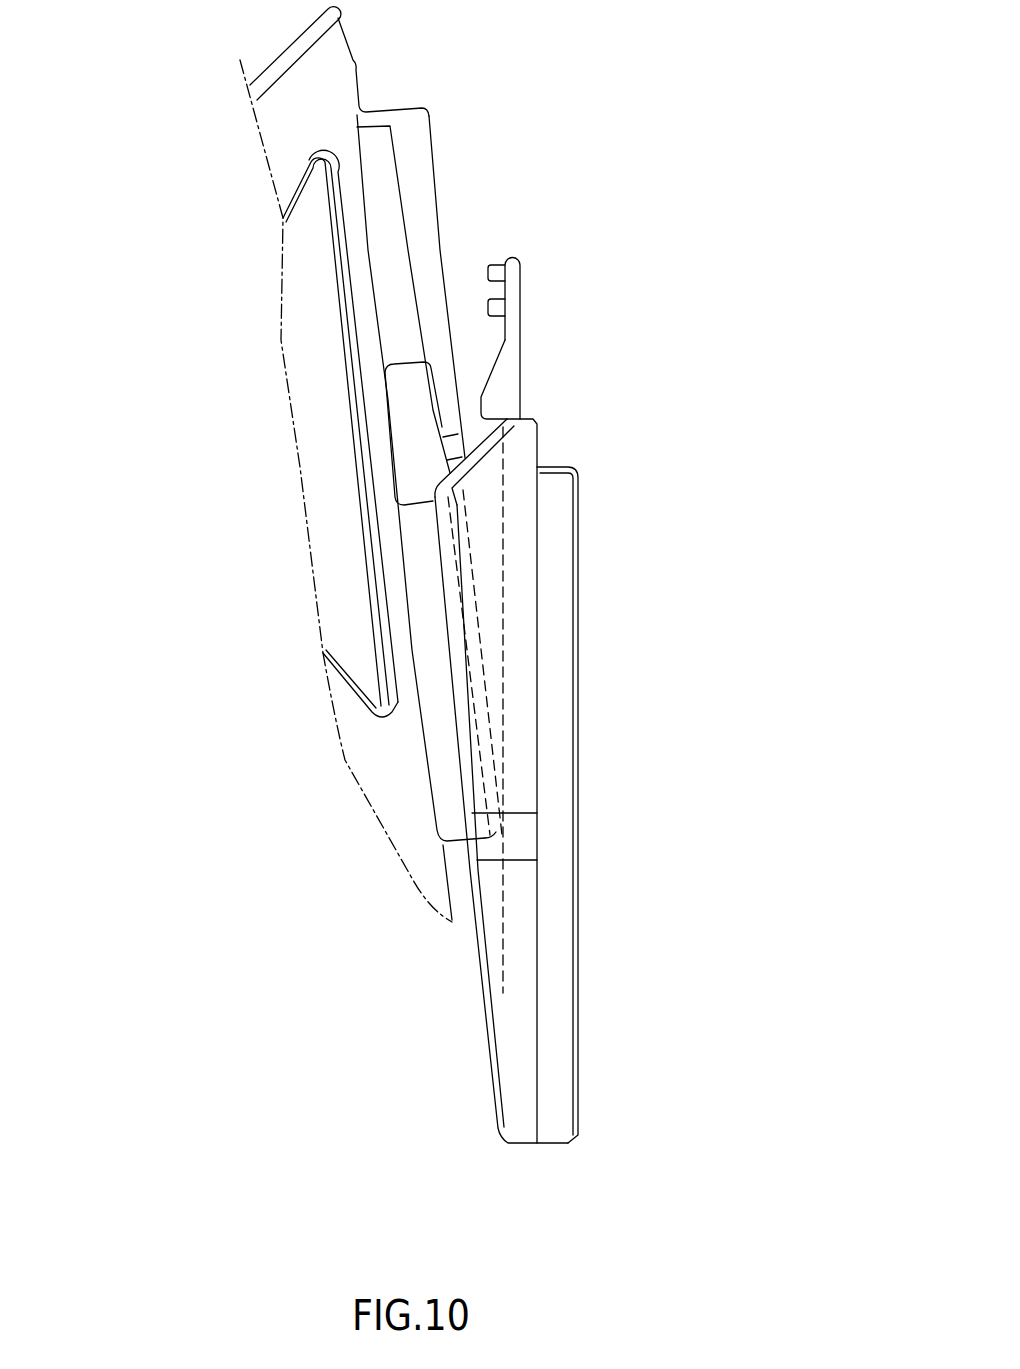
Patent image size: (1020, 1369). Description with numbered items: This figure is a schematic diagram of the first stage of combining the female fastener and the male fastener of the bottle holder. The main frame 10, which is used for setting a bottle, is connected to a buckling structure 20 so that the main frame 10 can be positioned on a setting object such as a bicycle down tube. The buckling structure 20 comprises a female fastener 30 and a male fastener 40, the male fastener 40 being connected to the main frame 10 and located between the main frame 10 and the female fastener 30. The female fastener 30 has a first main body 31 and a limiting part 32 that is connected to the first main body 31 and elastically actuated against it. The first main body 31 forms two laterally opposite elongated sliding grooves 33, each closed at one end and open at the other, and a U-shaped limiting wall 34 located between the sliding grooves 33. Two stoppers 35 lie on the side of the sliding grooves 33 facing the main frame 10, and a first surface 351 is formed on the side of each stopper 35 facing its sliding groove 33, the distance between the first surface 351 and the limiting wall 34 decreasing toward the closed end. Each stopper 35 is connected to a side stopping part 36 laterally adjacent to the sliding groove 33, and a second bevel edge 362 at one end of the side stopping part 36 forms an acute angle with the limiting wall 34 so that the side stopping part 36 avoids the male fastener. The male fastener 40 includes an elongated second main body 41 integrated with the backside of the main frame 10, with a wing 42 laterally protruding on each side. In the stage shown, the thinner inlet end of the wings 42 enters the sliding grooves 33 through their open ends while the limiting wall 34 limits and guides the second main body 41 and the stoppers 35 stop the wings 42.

The main frame 10 is at (293, 122).
The buckling structure 20 is at (632, 185).
The female fastener 30 is at (593, 838).
The first main body 31 is at (580, 983).
The limiting part 32 is at (485, 408).
The sliding groove 33 is at (483, 560).
The limiting wall 34 is at (503, 717).
The stopper 35 is at (447, 608).
The first surface 351 is at (470, 650).
The side stopping part 36 is at (409, 760).
The second bevel edge 362 is at (483, 440).
The male fastener 40 is at (434, 100).
The second main body 41 is at (488, 676).
The wing 42 is at (430, 225).